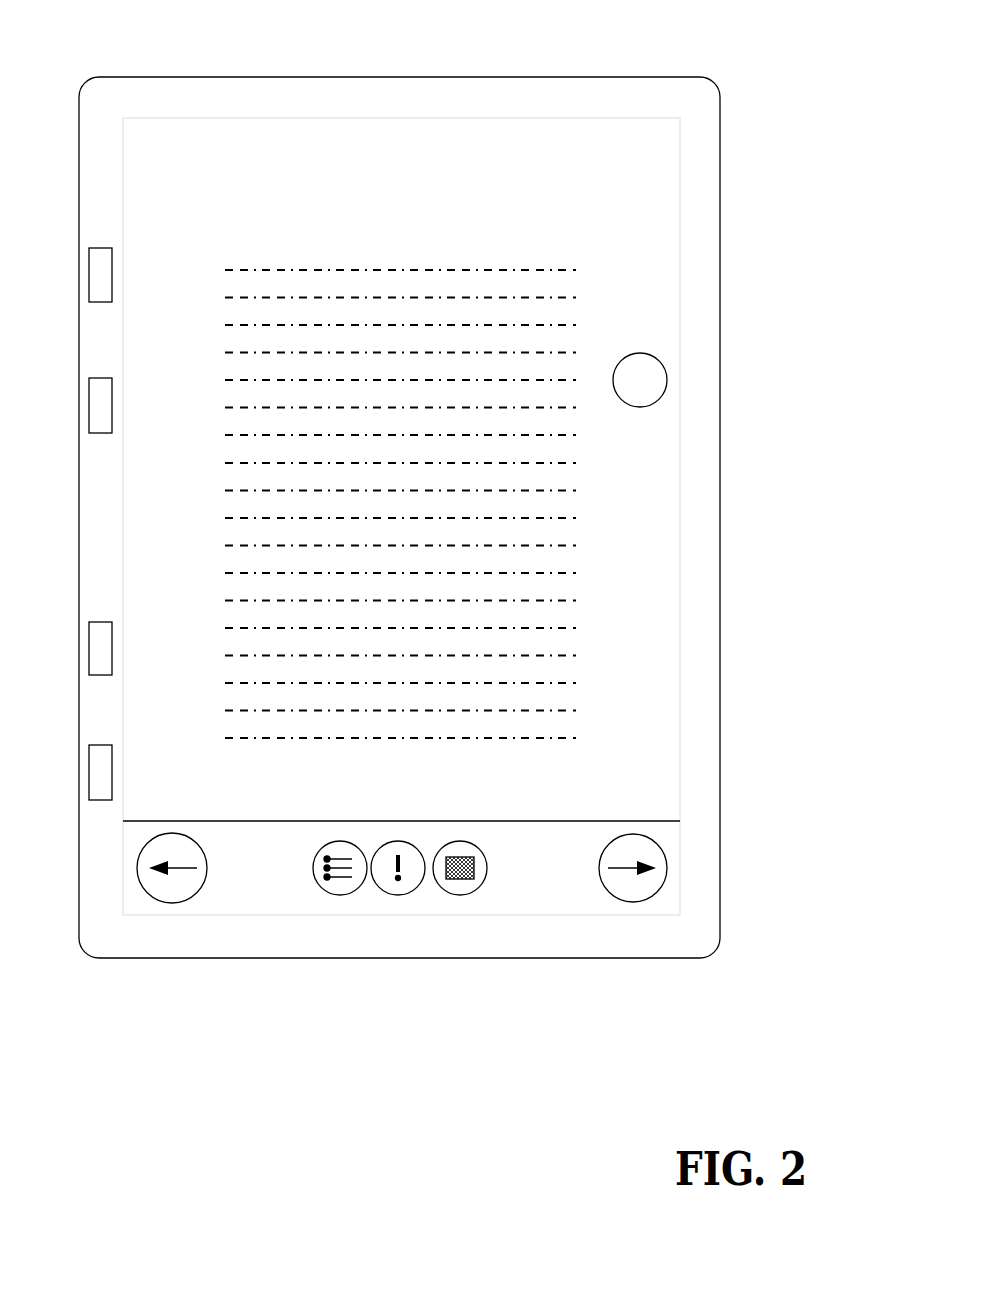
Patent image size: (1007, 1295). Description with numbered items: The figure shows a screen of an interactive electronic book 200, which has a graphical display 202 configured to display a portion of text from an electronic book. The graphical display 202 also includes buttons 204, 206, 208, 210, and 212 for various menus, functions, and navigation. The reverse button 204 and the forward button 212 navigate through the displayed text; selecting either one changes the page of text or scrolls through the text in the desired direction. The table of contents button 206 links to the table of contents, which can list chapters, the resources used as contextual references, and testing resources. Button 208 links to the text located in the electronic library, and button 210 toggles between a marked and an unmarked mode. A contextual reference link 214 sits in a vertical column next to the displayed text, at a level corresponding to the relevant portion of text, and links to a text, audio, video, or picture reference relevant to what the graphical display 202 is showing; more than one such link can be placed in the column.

The interactive electronic book 200 is at (240, 76).
The graphical display 202 is at (496, 117).
The reverse button 204 is at (170, 908).
The table of contents button 206 is at (335, 904).
The button 208 is at (397, 904).
The button 210 is at (462, 904).
The forward button 212 is at (632, 907).
The contextual reference link 214 is at (661, 354).